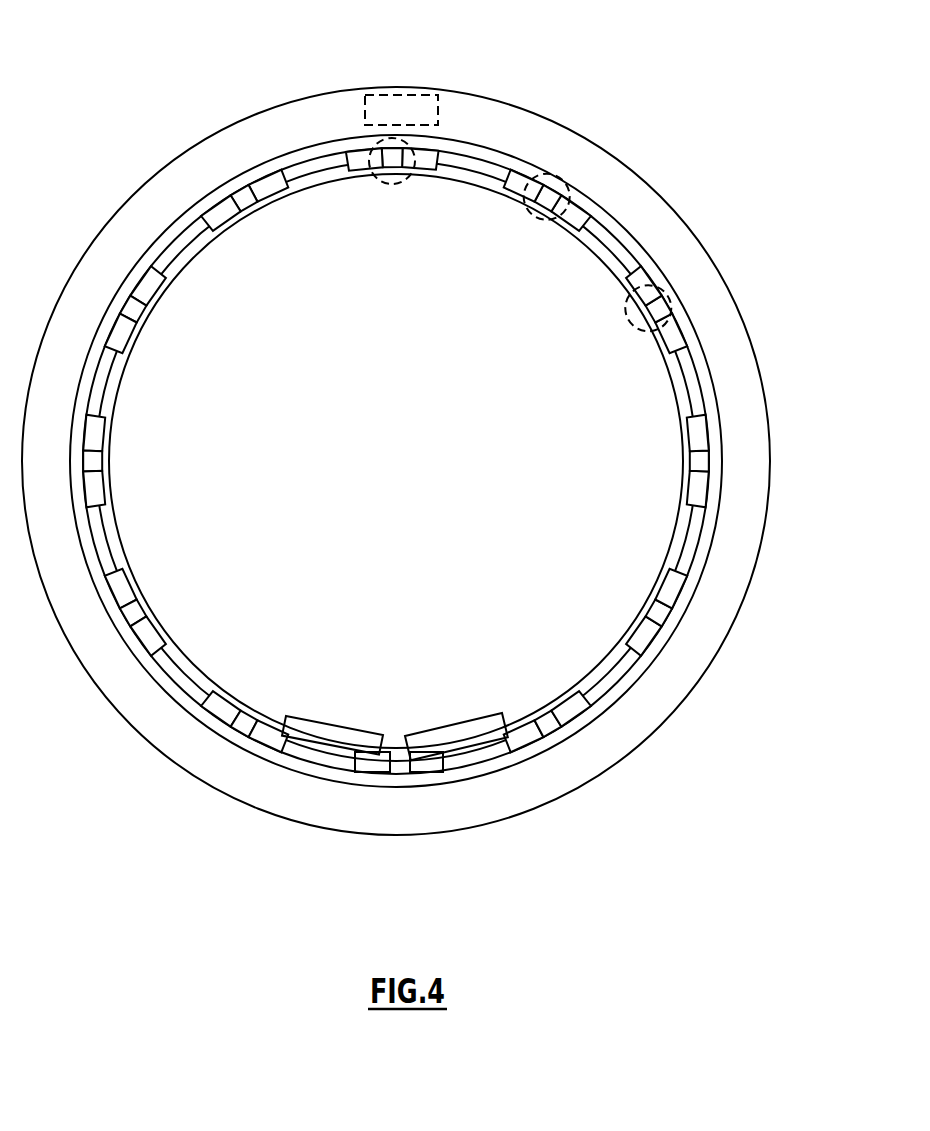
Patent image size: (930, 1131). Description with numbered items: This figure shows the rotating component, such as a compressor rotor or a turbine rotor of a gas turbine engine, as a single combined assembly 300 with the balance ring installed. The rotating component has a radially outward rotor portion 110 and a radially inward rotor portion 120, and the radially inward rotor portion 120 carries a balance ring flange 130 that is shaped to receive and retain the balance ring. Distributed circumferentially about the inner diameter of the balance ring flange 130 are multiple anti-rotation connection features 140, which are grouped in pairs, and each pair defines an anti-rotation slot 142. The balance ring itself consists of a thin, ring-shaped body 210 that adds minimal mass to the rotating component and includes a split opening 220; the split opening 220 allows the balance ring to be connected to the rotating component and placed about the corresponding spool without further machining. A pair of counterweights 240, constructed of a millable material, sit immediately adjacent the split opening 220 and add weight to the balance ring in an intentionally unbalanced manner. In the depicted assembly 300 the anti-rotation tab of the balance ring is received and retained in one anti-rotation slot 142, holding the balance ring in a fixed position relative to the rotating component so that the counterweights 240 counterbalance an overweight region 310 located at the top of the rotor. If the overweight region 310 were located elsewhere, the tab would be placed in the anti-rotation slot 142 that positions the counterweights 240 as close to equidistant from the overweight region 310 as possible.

The radially outward rotor portion 110 is at (735, 331).
The radially inward rotor portion 120 is at (165, 683).
The balance ring flange 130 is at (138, 610).
The anti-rotation connection features 140 is at (358, 152).
The anti-rotation slot 142 is at (392, 152).
The ring-shaped body 210 is at (188, 257).
The split opening 220 is at (391, 752).
The counterweights 240 is at (326, 745).
The wearable ring assembly 300 is at (422, 422).
The overweight region 310 is at (381, 93).